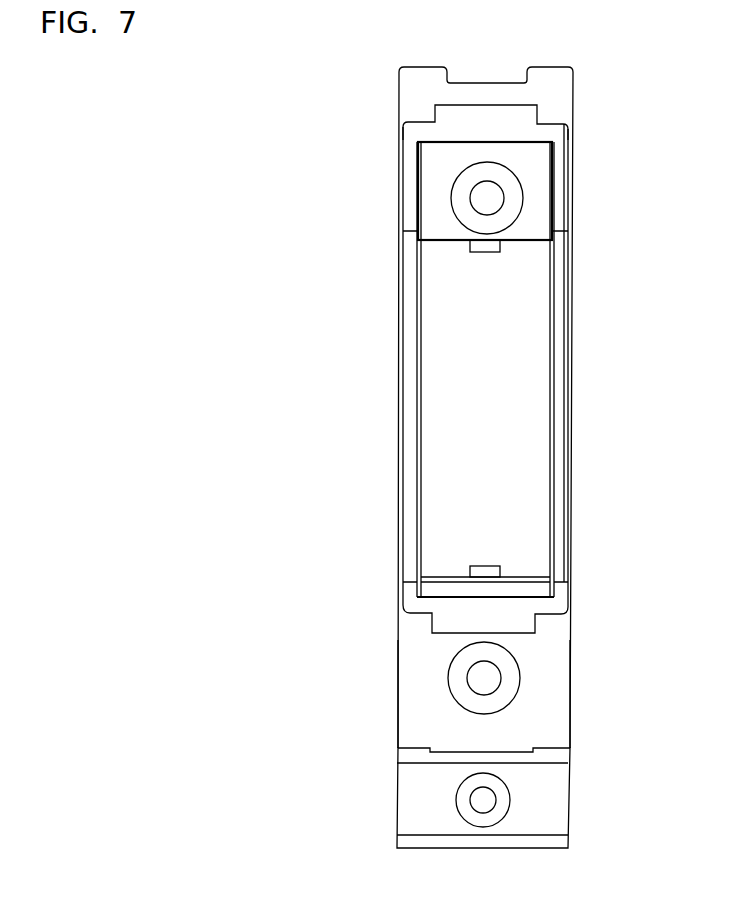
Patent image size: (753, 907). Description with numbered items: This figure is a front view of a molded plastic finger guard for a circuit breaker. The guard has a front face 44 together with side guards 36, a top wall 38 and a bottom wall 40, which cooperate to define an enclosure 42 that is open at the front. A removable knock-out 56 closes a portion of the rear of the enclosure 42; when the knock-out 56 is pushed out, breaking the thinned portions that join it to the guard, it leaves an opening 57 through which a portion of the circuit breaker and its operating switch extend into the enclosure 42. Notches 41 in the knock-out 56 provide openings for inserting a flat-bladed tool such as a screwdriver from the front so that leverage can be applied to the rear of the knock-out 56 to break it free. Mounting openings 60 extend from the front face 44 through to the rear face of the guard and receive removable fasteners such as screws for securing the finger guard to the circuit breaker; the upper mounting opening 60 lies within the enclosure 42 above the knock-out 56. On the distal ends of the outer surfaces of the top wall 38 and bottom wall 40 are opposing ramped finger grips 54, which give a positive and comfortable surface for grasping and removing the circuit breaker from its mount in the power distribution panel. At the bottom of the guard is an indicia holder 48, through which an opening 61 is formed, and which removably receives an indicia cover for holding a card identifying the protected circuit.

The top wall 38 is at (547, 135).
The ramped finger grips 54 is at (452, 117).
The side guards 36 is at (412, 400).
The opening 57 is at (553, 462).
The enclosure 42 is at (507, 275).
The knock-out 56 is at (498, 402).
The bottom wall 40 is at (418, 608).
The front face 44 is at (538, 177).
The mounting openings 60 is at (492, 198).
The notches 41 is at (480, 245).
The indicia holder 48 is at (427, 798).
The opening 61 is at (486, 802).